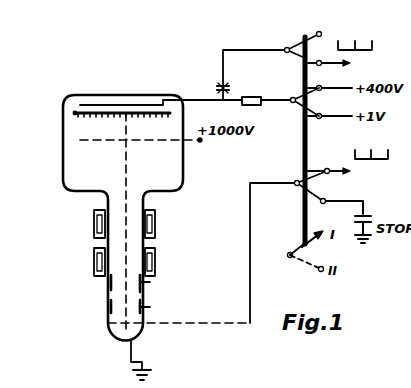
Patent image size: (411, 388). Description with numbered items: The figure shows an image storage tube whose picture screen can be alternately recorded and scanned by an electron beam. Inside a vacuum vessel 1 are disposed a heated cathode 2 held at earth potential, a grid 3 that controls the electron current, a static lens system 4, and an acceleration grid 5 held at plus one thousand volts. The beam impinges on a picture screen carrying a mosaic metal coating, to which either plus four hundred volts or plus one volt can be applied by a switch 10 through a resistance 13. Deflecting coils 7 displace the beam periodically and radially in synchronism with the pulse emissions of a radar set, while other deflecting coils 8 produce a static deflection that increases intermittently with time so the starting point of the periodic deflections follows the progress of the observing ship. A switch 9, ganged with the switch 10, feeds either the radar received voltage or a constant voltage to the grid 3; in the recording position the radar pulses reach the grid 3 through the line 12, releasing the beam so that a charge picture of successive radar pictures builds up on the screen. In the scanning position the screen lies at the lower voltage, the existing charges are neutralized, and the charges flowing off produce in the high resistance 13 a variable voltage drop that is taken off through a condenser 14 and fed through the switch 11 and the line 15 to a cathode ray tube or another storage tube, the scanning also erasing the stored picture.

The vacuum vessel 1 is at (183, 190).
The heated cathode 2 is at (126, 347).
The grid 3 is at (157, 322).
The static lens system 4 is at (150, 307).
The acceleration grid 5 is at (75, 113).
The deflecting coils 7 is at (156, 261).
The deflecting coils 8 is at (156, 221).
The switch 9 is at (296, 181).
The switch 10 is at (296, 98).
The switch 11 is at (299, 40).
The line 12 is at (349, 174).
The resistance 13 is at (251, 97).
The condenser 14 is at (218, 86).
The line 15 is at (347, 68).